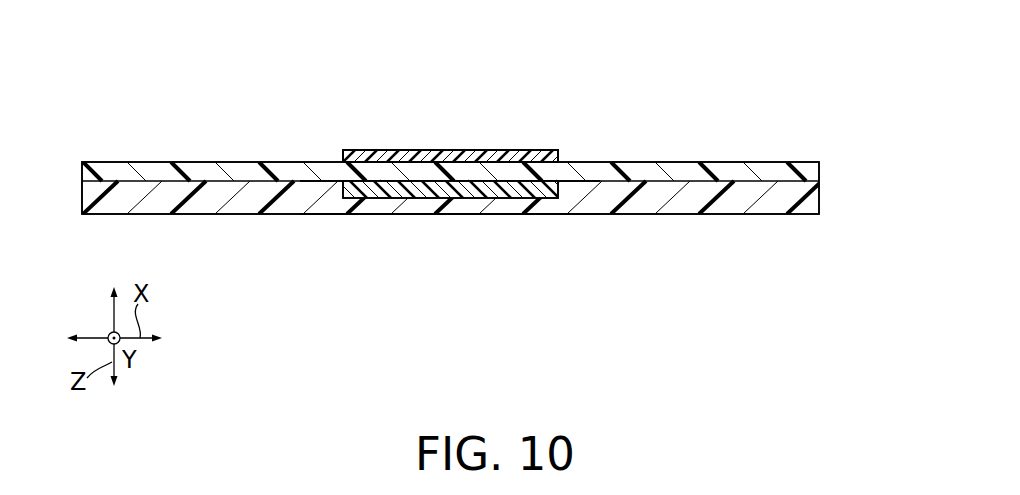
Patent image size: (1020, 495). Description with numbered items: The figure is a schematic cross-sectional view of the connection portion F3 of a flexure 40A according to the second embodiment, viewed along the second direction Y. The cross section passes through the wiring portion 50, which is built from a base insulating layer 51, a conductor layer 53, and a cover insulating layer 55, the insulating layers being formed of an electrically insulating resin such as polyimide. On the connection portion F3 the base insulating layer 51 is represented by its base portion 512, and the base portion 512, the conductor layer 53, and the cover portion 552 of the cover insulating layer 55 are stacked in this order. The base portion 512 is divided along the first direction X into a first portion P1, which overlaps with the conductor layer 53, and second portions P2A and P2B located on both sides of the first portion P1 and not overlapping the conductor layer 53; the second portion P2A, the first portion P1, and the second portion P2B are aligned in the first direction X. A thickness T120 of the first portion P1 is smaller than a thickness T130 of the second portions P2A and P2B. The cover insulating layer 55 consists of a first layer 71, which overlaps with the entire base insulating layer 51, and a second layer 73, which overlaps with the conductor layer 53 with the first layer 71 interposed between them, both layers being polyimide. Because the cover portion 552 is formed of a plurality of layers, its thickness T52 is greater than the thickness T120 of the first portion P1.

The wiring portion 50 is at (837, 105).
The base insulating layer 51 is at (450, 188).
The base portion 512 is at (578, 274).
The conductor layer 53 is at (553, 182).
The cover insulating layer 55 is at (450, 156).
The cover portion 552 is at (633, 63).
The first layer 71 is at (559, 165).
The second layer 73 is at (512, 150).
The connection portion F3 is at (396, 119).
The flexure 40A is at (450, 156).
The first portion P1 is at (463, 208).
The second portion P2A is at (315, 200).
The second portion P2B is at (597, 202).
The thickness of the cover portion T52 is at (466, 170).
The thickness of the first portion T120 is at (416, 222).
The thickness of the second portions T130 is at (257, 182).